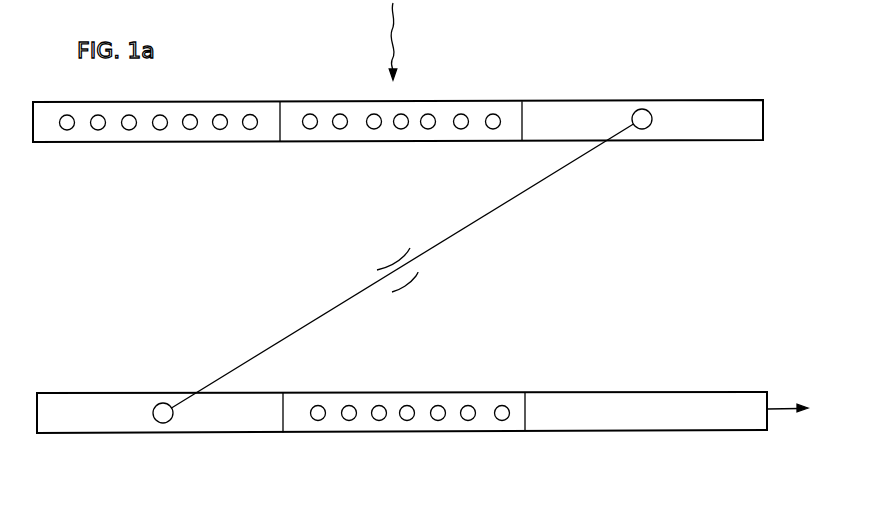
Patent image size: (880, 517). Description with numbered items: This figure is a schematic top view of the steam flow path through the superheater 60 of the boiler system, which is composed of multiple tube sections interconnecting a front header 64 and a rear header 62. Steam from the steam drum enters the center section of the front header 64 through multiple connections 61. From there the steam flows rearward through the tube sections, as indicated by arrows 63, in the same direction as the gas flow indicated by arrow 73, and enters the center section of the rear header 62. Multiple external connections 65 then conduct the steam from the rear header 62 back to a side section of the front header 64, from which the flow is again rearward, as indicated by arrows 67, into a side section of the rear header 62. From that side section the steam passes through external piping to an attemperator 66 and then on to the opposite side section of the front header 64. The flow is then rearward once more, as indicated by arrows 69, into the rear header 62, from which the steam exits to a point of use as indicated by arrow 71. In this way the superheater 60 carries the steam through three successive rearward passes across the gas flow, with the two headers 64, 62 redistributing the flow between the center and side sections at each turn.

The superheater 60 is at (101, 272).
The connections 61 is at (310, 58).
The rear header 62 is at (698, 392).
The arrows 63 is at (401, 141).
The front header 64 is at (633, 100).
The external connections 65 is at (74, 130).
The attemperator 66 is at (399, 285).
The arrows 67 is at (158, 141).
The arrows 69 is at (643, 140).
The arrow 71 is at (795, 411).
The arrow 73 is at (395, 49).